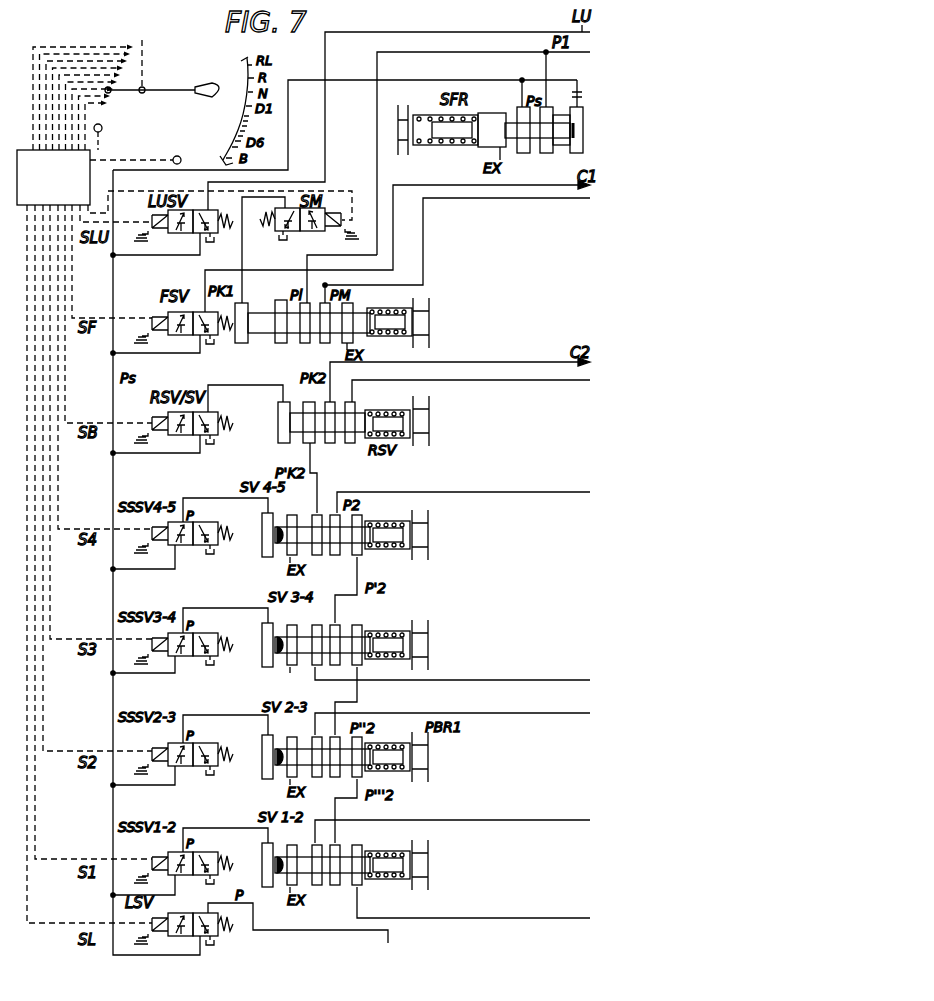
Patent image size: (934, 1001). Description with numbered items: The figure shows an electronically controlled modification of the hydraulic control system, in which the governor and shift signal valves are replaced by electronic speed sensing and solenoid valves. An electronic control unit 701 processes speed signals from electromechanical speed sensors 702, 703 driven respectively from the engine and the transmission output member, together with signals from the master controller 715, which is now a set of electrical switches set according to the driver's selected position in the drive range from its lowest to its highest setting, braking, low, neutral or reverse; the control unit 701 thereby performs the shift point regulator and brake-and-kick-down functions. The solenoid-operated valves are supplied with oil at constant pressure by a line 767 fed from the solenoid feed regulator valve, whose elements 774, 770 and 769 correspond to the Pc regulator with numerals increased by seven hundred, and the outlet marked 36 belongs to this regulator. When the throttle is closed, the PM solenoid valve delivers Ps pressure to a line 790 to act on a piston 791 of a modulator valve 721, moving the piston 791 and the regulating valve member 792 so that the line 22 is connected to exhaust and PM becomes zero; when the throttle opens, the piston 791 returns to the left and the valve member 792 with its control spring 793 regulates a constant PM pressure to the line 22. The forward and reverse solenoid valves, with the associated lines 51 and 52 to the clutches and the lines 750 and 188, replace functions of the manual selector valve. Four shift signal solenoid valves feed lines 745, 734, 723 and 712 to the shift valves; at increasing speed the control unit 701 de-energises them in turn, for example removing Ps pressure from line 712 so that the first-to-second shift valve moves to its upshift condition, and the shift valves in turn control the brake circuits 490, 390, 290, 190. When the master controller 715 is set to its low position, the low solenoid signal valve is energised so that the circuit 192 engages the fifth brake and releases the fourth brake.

The electronic control unit 701 is at (78, 167).
The electromechanical speed sensor 702 is at (101, 126).
The electromechanical speed sensor 703 is at (180, 157).
The master controller 715 is at (152, 80).
The line 767 is at (300, 148).
The pressure relief symbol 36 is at (577, 82).
The spring of regulator valve 774 is at (430, 115).
The regulator valve spool 770 is at (484, 138).
The regulator valve land 769 is at (560, 133).
The clutch C1 line 51 is at (450, 186).
The line 22 is at (424, 265).
The line 790 is at (243, 284).
The piston 791 is at (252, 330).
The regulating valve member 792 is at (294, 328).
The control spring 793 is at (420, 318).
The modulator valve 721 is at (438, 325).
The line 750 is at (246, 385).
The clutch C2 line 52 is at (468, 350).
The line 188 is at (528, 381).
The line 490 is at (546, 492).
The line 745 is at (190, 490).
The line 734 is at (210, 620).
The line 390 is at (516, 680).
The line 723 is at (208, 715).
The line 290 is at (512, 713).
The line 712 is at (210, 828).
The line 190 is at (515, 820).
The circuit 192 is at (388, 938).